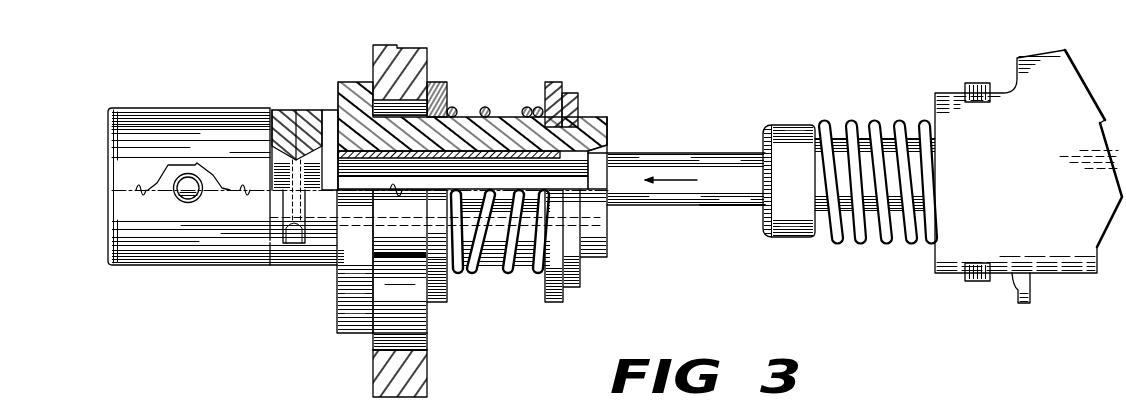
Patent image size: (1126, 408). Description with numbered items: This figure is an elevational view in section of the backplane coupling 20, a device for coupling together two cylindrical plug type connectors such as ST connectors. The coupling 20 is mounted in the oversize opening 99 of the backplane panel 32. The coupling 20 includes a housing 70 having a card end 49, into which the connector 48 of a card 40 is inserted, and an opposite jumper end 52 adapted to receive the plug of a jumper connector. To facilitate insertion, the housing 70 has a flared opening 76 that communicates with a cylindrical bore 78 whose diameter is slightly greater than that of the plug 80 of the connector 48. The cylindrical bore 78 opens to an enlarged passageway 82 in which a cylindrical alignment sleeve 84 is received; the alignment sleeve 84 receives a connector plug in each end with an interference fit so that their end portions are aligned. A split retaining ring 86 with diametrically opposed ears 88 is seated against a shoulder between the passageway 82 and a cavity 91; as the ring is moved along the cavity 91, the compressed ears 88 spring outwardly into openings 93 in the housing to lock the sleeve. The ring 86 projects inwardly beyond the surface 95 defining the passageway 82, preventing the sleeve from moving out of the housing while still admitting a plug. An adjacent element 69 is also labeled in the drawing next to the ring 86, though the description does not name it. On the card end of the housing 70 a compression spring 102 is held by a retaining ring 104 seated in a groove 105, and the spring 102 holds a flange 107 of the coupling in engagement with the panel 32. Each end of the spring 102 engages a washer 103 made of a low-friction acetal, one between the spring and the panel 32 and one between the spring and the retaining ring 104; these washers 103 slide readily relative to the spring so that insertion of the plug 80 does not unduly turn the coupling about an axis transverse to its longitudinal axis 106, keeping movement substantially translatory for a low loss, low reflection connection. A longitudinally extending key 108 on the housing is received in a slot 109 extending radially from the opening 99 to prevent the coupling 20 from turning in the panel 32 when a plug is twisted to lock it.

The coupling 20 is at (160, 332).
The panel 32 is at (422, 368).
The card 40 is at (967, 71).
The connector 48 is at (817, 112).
The card end 49 is at (631, 104).
The jumper end 52 is at (178, 99).
The washer 69 is at (330, 110).
The housing 70 is at (246, 280).
The flared opening 76 is at (573, 222).
The cylindrical bore 78 is at (585, 186).
The plug 80 is at (712, 206).
The enlarged passageway 82 is at (455, 154).
The alignment sleeve 84 is at (504, 154).
The split retaining ring 86 is at (306, 112).
The ears 88 is at (283, 190).
The cavity 91 is at (115, 166).
The openings 93 is at (283, 208).
The surface 95 is at (345, 153).
The opening 99 is at (390, 100).
The compression spring 102 is at (528, 106).
The washers 103 is at (444, 84).
The retaining ring 104 is at (580, 101).
The groove 105 is at (606, 122).
The longitudinal axis 106 is at (645, 202).
The flange 107 is at (337, 305).
The key 108 is at (432, 321).
The slot 109 is at (376, 342).